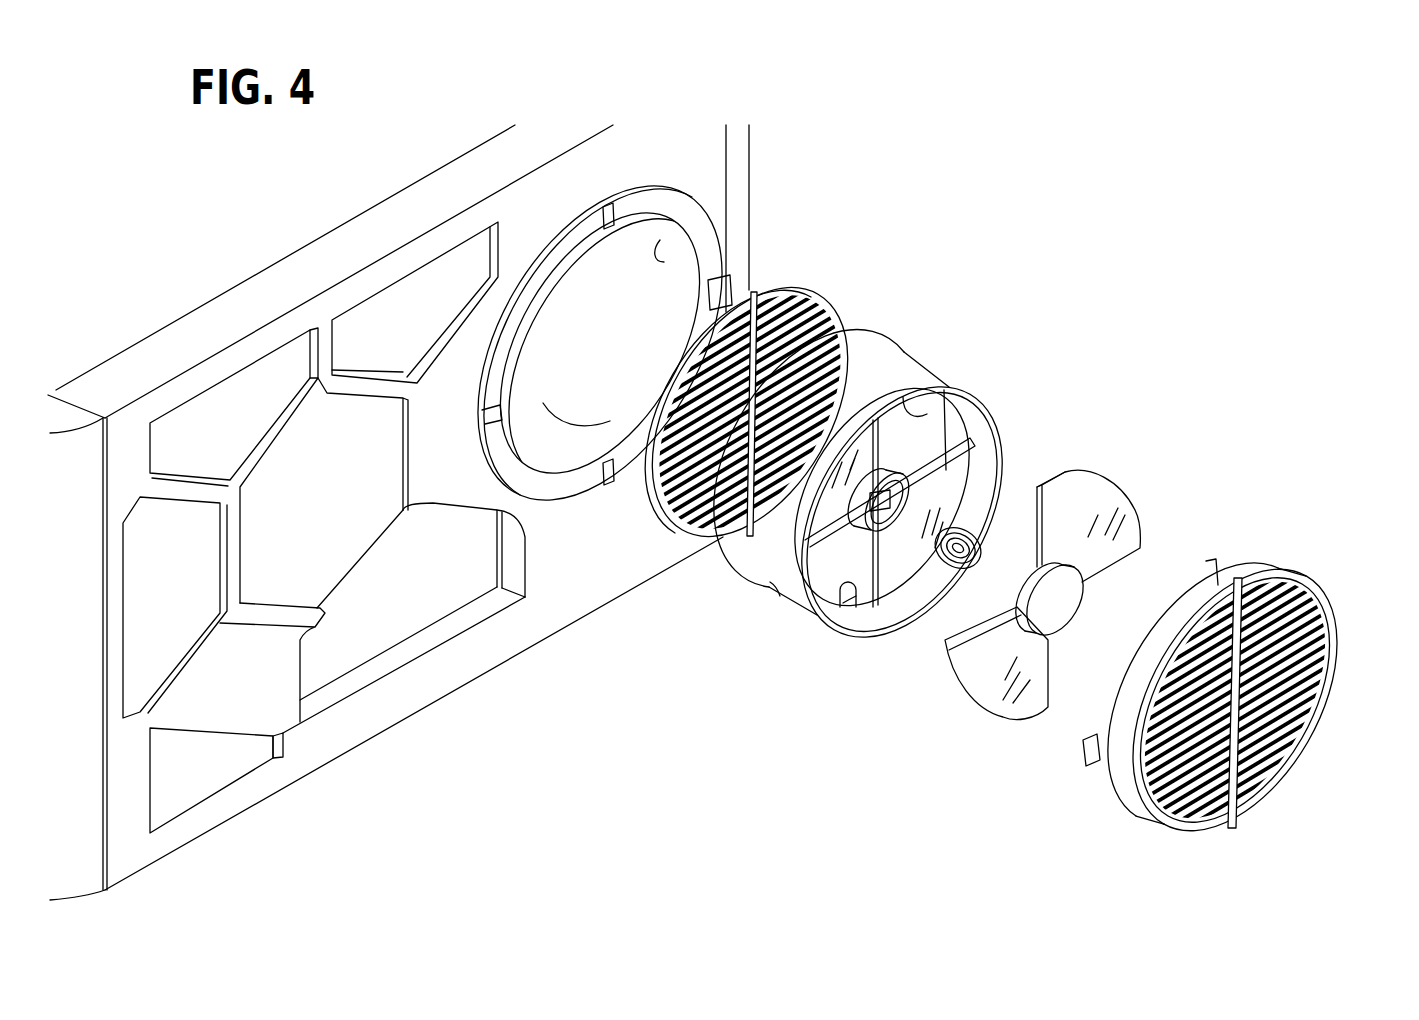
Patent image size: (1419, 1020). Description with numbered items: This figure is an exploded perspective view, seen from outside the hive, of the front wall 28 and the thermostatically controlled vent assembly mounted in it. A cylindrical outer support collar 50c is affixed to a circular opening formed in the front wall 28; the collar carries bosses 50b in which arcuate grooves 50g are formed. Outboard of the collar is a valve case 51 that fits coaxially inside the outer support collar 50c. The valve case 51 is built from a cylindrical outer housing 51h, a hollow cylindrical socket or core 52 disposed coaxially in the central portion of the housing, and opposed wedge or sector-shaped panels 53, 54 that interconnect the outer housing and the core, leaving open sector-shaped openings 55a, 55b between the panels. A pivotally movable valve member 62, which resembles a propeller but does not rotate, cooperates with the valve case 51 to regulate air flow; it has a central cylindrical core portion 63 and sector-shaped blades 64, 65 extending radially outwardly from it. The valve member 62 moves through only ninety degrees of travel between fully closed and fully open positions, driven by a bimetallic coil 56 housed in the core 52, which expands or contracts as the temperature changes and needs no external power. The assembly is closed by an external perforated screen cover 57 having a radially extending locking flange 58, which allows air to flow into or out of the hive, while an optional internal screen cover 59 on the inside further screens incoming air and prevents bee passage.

The front wall 28 is at (333, 517).
The bosses 50b is at (613, 207).
The cylindrical outer support collar 50c is at (670, 262).
The arcuate grooves 50g is at (604, 486).
The internal screen cover 59 is at (826, 290).
The valve case 51 is at (936, 362).
The cylindrical outer housing 51h is at (770, 582).
The hollow cylindrical socket or core 52 is at (843, 603).
The wedge or sector-shaped panel 53 is at (876, 441).
The wedge or sector-shaped panel 54 is at (970, 462).
The wedge or sector-shaped opening 55a is at (908, 413).
The wedge or sector-shaped opening 55b is at (845, 592).
The bimetallic coil 56 is at (976, 557).
The pivotally movable valve member 62 is at (1101, 609).
The central cylindrical core portion 63 is at (1067, 616).
The wedge or sector-shaped blade 64 is at (1003, 717).
The wedge or sector-shaped blade 65 is at (1108, 478).
The external perforated screen cover 57 is at (1330, 586).
The locking flange 58 is at (1097, 752).